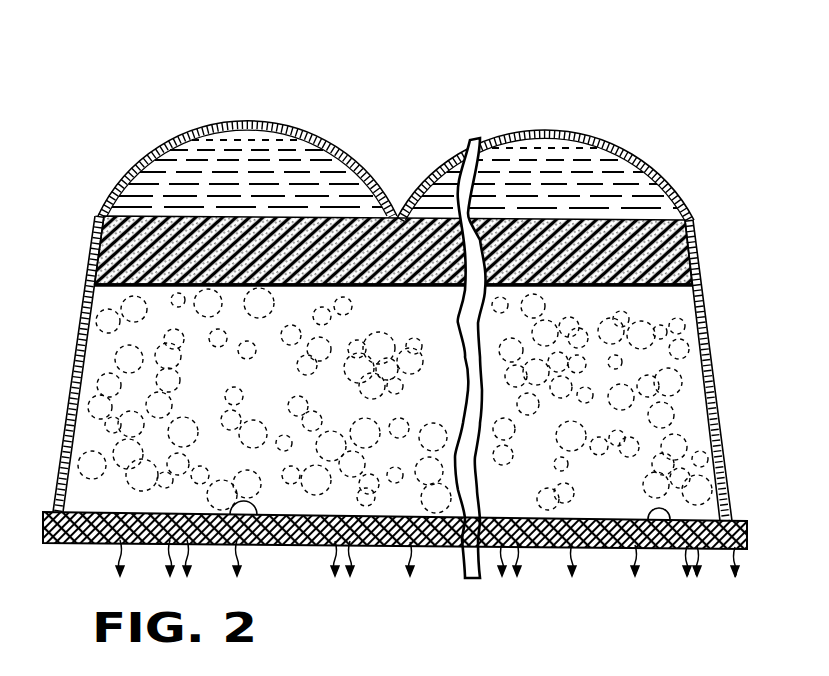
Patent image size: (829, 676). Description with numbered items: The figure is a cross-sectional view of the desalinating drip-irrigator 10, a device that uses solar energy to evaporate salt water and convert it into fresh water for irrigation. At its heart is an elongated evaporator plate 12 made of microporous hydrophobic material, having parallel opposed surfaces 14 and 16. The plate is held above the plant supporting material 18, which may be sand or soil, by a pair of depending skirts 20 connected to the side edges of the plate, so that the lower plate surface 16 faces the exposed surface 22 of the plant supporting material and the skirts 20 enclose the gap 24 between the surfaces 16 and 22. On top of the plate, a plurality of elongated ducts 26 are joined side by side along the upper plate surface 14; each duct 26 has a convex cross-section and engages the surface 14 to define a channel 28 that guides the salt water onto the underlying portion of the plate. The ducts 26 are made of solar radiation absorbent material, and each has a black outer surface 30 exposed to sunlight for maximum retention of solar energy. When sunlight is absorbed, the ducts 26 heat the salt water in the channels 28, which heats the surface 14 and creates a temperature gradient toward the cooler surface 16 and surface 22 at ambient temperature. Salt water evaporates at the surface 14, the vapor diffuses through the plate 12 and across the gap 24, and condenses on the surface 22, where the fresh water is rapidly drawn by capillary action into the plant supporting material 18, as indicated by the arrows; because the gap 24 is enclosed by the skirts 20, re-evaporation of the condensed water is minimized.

The desalinating drip-irrigator 10 is at (163, 116).
The evaporator plate 12 is at (130, 250).
The plate surface 14 is at (127, 218).
The plate surface 16 is at (140, 290).
The plant supporting material 18 is at (68, 543).
The depending skirts 20 is at (80, 340).
The exposed surface 22 is at (258, 542).
The gap 24 is at (323, 407).
The elongated ducts 26 is at (415, 160).
The channel 28 is at (232, 178).
The outer surface 30 is at (130, 168).